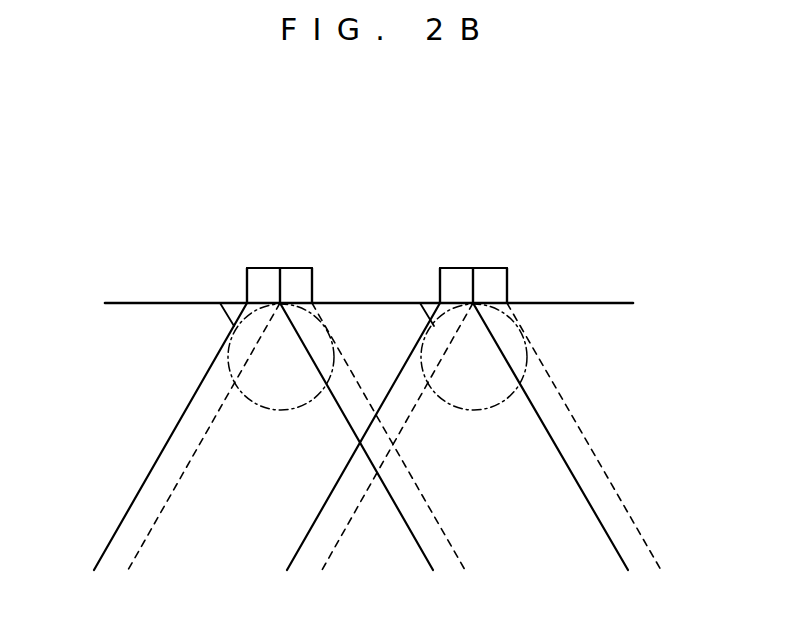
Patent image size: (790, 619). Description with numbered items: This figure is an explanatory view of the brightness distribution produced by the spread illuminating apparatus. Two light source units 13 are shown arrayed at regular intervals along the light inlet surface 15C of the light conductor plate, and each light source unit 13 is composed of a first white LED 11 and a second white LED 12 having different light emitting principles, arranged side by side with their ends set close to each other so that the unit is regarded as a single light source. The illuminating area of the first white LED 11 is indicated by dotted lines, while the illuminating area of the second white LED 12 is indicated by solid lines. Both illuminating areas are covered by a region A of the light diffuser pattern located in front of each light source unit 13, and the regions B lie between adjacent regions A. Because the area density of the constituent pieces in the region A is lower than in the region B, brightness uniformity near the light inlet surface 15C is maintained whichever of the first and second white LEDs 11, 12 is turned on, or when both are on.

The first white LED 11 is at (298, 280).
The second white LED 12 is at (263, 280).
The light source unit 13 is at (340, 157).
The light inlet surface 15C is at (605, 303).
The region A is at (220, 303).
The region B is at (162, 327).